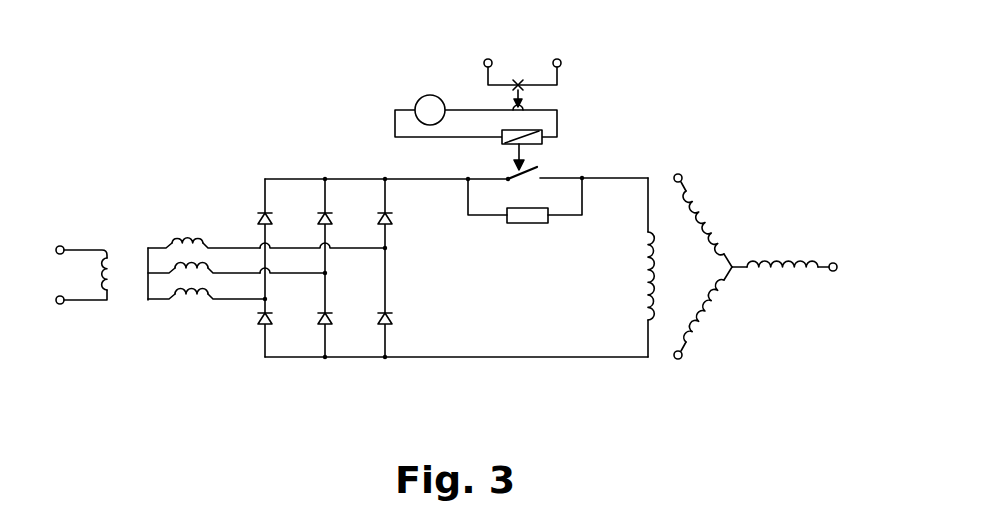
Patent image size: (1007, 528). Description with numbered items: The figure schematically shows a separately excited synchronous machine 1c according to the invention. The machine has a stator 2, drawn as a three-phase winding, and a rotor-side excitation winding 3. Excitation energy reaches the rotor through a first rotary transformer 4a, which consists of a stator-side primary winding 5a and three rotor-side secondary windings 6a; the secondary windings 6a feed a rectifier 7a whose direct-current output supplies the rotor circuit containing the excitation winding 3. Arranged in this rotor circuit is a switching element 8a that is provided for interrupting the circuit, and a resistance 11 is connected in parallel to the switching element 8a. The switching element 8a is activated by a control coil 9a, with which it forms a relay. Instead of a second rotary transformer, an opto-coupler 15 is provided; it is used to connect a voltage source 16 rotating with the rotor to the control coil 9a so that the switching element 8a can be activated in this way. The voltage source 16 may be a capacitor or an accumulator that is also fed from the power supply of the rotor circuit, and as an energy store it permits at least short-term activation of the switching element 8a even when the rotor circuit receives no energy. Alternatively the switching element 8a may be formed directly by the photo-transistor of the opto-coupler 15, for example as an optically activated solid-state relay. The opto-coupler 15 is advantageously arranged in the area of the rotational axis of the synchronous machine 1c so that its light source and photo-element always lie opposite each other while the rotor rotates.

The synchronous machine 1c is at (143, 100).
The stator 2 is at (755, 270).
The excitation winding 3 is at (645, 300).
The first rotary transformer 4a is at (160, 318).
The first stator-side primary winding 5a is at (107, 300).
The first rotor-side secondary windings 6a is at (182, 300).
The rectifier 7a is at (385, 170).
The switching element 8a is at (536, 169).
The control coil 9a is at (528, 138).
The resistance 11 is at (533, 218).
The opto-coupler 15 is at (520, 80).
The voltage source 16 is at (428, 103).